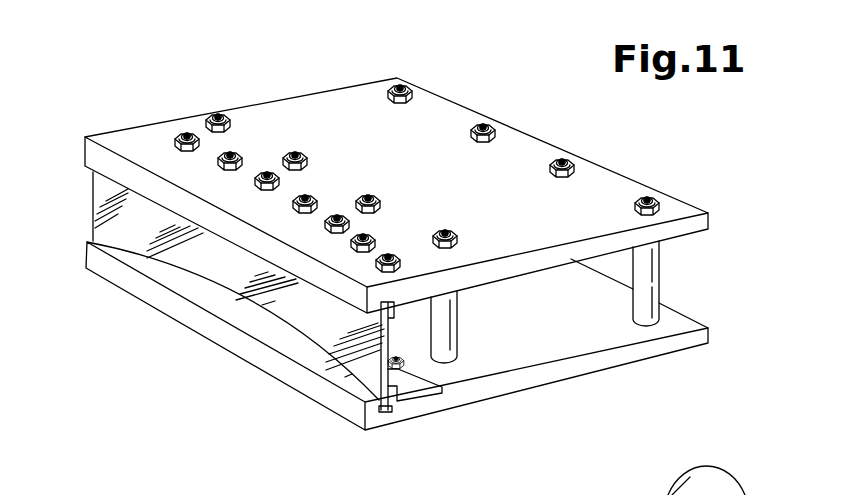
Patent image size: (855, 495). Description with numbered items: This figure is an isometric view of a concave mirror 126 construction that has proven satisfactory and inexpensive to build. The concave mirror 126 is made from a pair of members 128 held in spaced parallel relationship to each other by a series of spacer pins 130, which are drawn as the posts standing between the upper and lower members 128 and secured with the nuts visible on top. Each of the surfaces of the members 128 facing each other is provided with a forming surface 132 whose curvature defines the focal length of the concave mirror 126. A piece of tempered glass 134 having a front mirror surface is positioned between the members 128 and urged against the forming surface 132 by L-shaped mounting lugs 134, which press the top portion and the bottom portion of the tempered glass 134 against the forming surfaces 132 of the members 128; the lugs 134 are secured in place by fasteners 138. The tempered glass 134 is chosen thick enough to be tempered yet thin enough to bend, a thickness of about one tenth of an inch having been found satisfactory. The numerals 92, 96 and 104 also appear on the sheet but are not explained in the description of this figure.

The concave mirror 126 is at (537, 116).
The members 128 is at (438, 107).
The spacer pins 130 is at (274, 168).
The forming surface 132 is at (386, 412).
The tempered glass 134 is at (100, 200).
The fasteners 138 is at (345, 217).
The strip 92 is at (392, 302).
The spacer post 96 is at (448, 291).
The member 104 is at (740, 477).